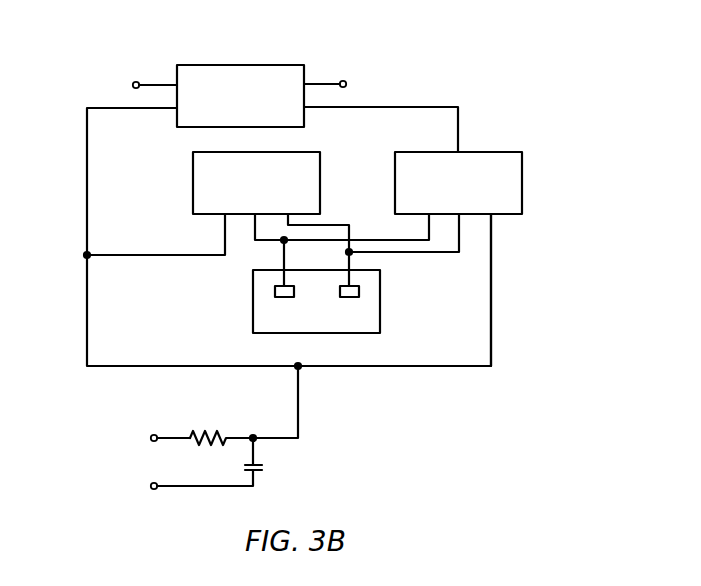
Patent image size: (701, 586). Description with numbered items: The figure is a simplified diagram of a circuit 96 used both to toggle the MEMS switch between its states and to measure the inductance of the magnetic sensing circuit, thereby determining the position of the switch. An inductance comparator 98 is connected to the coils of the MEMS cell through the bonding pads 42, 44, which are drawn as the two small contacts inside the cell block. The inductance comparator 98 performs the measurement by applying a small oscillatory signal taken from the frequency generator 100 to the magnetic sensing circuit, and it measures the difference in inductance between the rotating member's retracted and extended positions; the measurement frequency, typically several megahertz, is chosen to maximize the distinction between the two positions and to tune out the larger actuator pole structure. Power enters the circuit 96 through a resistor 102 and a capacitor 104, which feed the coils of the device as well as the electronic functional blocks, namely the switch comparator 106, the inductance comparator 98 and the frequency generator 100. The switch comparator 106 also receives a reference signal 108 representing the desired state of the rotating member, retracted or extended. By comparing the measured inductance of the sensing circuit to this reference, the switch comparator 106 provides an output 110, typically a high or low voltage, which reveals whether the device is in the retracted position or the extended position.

The circuit 96 is at (504, 104).
The inductance comparator 98 is at (522, 178).
The frequency generator 100 is at (193, 185).
The resistor 102 is at (205, 428).
The capacitor 104 is at (265, 466).
The switch comparator 106 is at (224, 65).
The reference signal 108 is at (133, 84).
The output 110 is at (347, 84).
The bonding pad 42 is at (359, 292).
The bonding pad 44 is at (275, 292).